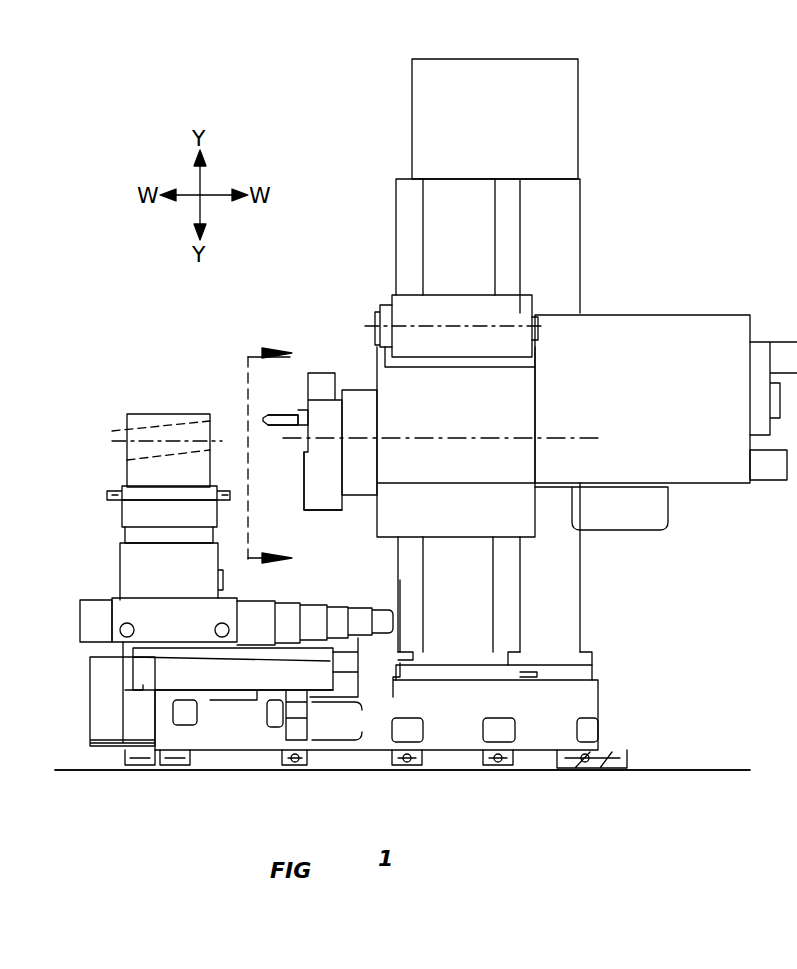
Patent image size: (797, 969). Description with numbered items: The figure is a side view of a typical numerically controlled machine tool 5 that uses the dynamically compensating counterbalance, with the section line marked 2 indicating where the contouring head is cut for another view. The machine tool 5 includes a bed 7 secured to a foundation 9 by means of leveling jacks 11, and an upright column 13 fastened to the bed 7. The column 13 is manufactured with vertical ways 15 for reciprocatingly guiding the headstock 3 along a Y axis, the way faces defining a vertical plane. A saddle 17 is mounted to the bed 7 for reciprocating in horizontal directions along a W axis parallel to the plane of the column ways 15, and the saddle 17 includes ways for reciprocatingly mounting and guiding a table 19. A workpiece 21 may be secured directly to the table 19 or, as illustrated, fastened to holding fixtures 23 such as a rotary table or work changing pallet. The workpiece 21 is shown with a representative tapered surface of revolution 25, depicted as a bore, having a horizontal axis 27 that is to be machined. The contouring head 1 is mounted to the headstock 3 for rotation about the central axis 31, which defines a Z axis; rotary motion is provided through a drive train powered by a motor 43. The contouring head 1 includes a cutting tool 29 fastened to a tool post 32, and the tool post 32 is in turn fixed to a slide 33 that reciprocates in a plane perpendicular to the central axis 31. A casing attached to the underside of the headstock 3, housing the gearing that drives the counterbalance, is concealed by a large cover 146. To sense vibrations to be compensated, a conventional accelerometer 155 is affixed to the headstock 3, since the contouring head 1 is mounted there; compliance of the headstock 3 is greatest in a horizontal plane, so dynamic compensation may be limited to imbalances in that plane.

The contouring head 1 is at (332, 518).
The section line 2- 2 is at (264, 463).
The headstock 3 is at (378, 544).
The machine tool 5 is at (592, 604).
The bed 7 is at (590, 700).
The foundation 9 is at (652, 807).
The leveling jacks 11 is at (490, 770).
The column 13 is at (572, 566).
The vertical ways 15 is at (412, 220).
The saddle 17 is at (143, 672).
The table 19 is at (128, 598).
The workpiece 21 is at (133, 472).
The holding fixtures 23 is at (128, 518).
The tapered surface of revolution 25 is at (118, 430).
The horizontal axis 27 is at (115, 442).
The cutting tool 29 is at (263, 417).
The central axis 31 is at (560, 441).
The tool post 32 is at (273, 425).
The slide 33 is at (330, 373).
The motor 43 is at (407, 303).
The cover 146 is at (472, 527).
The accelerometer 155 is at (765, 472).